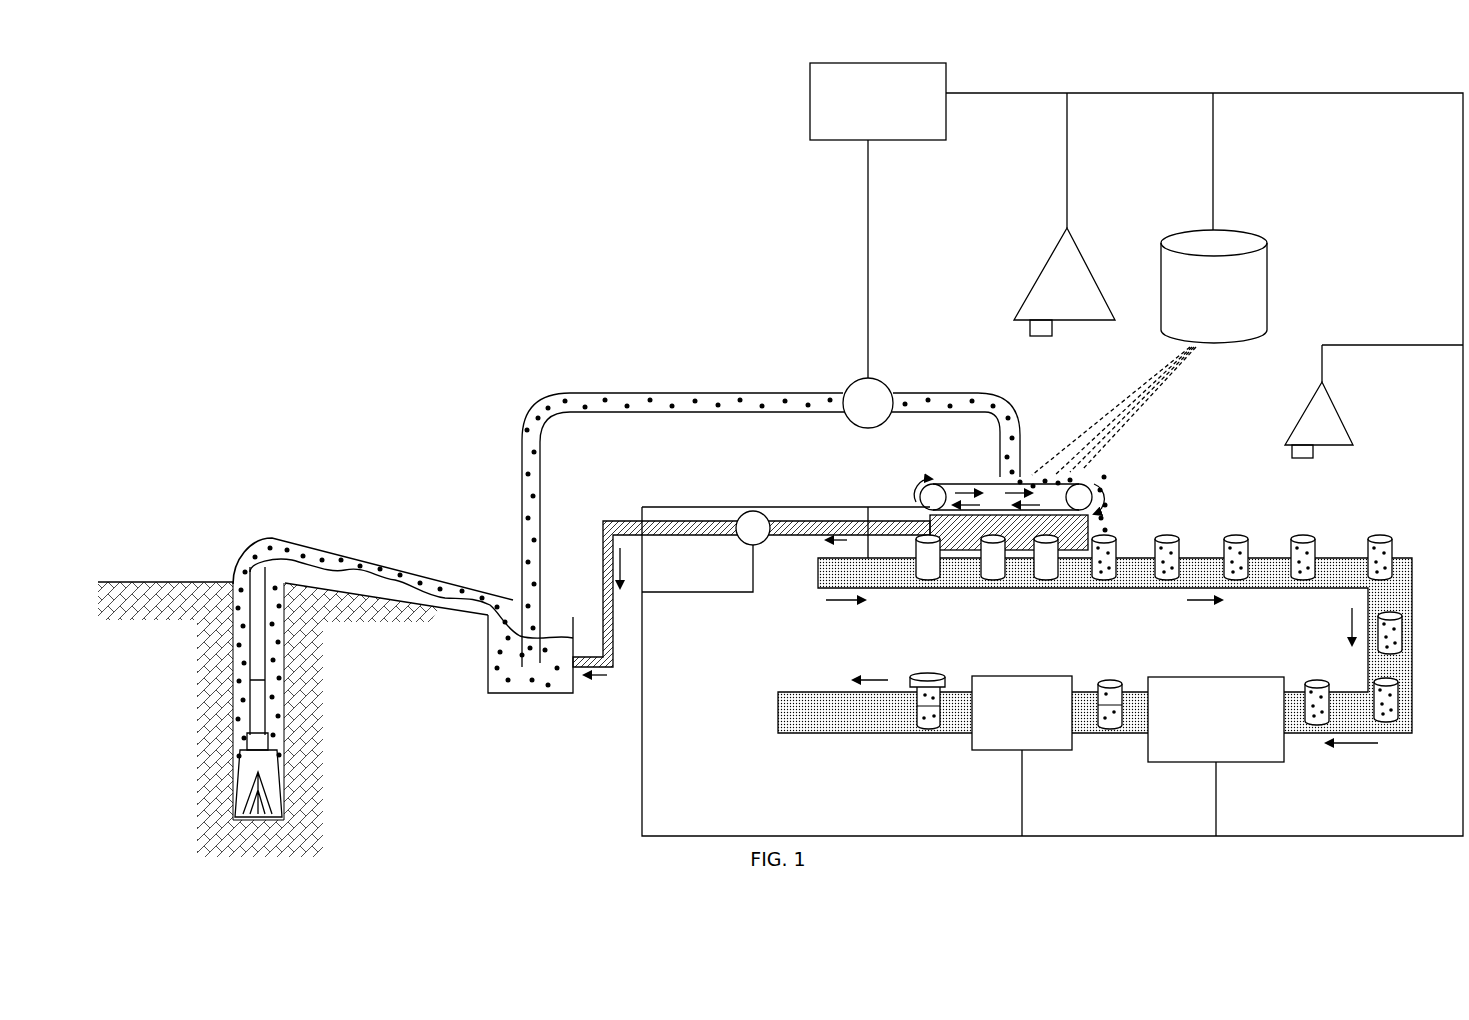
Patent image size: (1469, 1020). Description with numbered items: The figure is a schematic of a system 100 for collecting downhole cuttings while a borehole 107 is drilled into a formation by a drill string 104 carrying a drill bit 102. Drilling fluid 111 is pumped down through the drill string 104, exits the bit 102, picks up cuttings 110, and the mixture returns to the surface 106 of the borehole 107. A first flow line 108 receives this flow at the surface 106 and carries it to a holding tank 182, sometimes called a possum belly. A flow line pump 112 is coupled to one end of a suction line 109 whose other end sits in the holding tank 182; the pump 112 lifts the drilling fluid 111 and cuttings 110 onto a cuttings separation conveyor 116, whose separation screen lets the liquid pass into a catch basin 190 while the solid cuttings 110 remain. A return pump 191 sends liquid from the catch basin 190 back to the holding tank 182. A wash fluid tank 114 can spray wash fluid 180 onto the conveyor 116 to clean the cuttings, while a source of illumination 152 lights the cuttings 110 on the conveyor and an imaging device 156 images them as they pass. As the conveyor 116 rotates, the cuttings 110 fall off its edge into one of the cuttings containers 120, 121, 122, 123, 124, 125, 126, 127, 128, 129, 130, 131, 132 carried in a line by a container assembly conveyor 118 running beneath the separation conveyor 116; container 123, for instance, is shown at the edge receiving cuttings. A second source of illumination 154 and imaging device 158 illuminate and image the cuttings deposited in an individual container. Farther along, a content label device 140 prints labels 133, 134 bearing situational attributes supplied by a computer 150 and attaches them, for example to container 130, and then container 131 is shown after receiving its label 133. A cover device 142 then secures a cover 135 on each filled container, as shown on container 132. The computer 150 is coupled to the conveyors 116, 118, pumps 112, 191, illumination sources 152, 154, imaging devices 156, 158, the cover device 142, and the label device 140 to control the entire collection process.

The system 100 is at (470, 192).
The drill bit 102 is at (265, 768).
The drill string 104 is at (247, 698).
The surface 106 is at (178, 582).
The borehole 107 is at (237, 652).
The first flow line 108 is at (345, 572).
The suction line 109 is at (575, 393).
The cuttings 110 is at (432, 590).
The drilling fluid 111 is at (233, 578).
The flow line pump 112 is at (845, 388).
The wash fluid tank 114 is at (1214, 286).
The cuttings separation conveyor 116 is at (950, 487).
The container assembly conveyor 118 is at (900, 583).
The cuttings container 120 is at (932, 567).
The cuttings container 121 is at (993, 567).
The cuttings container 122 is at (1046, 567).
The cuttings container 123 is at (1104, 573).
The cuttings container 124 is at (1167, 571).
The cuttings container 125 is at (1236, 573).
The cuttings container 126 is at (1303, 573).
The cuttings container 127 is at (1380, 535).
The cuttings container 128 is at (1412, 580).
The cuttings container 129 is at (1390, 722).
The cuttings container 130 is at (1315, 725).
The cuttings container 131 is at (1118, 727).
The cuttings container 132 is at (940, 727).
The label 133 is at (1100, 722).
The label 134 is at (927, 712).
The cover 135 is at (912, 678).
The content label device 140 is at (1216, 756).
The cover device 142 is at (1022, 756).
The computer 150 is at (878, 101).
The source of illumination 152 is at (1040, 270).
The source of illumination 154 is at (1292, 425).
The imaging device 156 is at (1030, 330).
The imaging device 158 is at (1292, 452).
The wash fluid 180 is at (1125, 412).
The holding tank 182 is at (550, 693).
The catch basin 190 is at (927, 517).
The return pump 191 is at (752, 512).